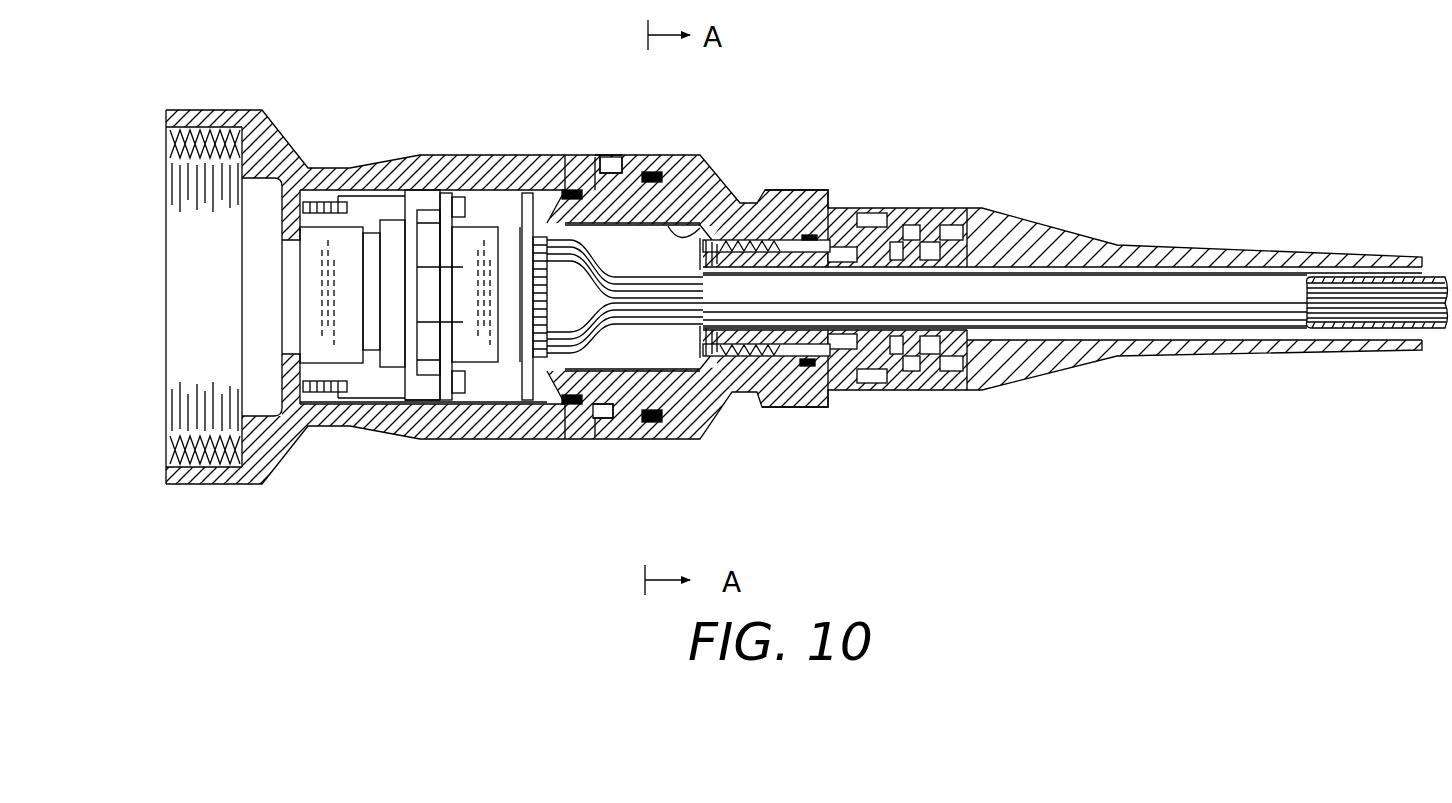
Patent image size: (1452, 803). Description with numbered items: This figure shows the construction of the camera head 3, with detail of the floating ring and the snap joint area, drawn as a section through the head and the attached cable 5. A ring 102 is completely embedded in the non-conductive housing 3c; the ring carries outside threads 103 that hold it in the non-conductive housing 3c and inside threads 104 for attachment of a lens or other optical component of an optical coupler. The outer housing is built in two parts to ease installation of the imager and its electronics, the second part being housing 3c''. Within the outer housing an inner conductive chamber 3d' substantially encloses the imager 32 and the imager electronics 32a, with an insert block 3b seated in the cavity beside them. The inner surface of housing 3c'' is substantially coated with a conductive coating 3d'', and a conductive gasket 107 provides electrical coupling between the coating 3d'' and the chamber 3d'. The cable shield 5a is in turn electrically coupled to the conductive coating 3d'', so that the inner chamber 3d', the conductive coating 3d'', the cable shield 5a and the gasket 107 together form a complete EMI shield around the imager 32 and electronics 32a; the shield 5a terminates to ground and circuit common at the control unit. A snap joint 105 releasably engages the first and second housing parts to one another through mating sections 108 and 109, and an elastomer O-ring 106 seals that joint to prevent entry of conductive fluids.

The camera head 3 is at (770, 457).
The ring 102 is at (160, 151).
The outside threads 103 is at (203, 128).
The inside threads 104 is at (203, 167).
The non-conductive housing 3c is at (302, 260).
The insert block 3b is at (347, 250).
The inner conductive chamber 3d' is at (476, 229).
The imager 32 is at (393, 357).
The imager electronics 32a is at (457, 403).
The conductive gasket 107 is at (567, 190).
The snap joint 105 is at (607, 155).
The mating section 108 is at (625, 175).
The elastomer O-ring 106 is at (655, 423).
The mating section 109 is at (637, 422).
The conductive coating 3d'' is at (671, 260).
The second outer housing part 3c'' is at (838, 278).
The cable shield 5a is at (1180, 287).
The cable 5 is at (1332, 317).